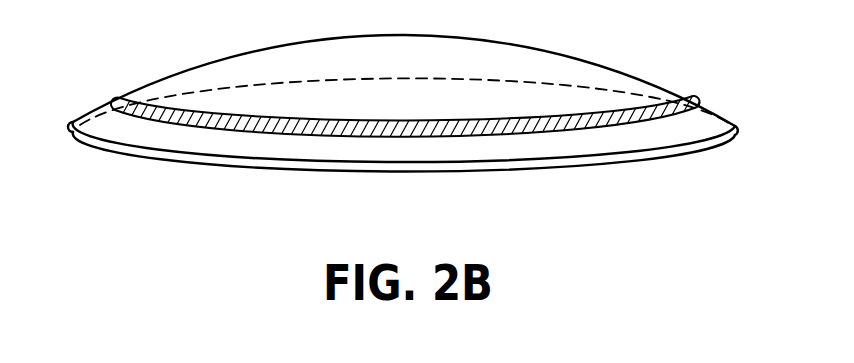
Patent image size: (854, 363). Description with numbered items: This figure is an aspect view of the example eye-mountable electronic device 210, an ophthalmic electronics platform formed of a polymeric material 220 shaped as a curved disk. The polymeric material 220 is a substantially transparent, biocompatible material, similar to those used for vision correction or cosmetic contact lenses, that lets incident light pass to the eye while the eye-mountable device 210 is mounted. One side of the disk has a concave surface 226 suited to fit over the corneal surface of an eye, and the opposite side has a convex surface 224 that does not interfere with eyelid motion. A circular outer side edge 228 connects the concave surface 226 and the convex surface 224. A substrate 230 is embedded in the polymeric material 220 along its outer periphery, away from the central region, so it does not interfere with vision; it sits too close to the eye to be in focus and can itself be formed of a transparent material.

The eye-mountable electronic device 210 is at (167, 38).
The polymeric material 220 is at (159, 168).
The convex surface 224 is at (645, 72).
The concave surface 226 is at (662, 138).
The circular outer side edge 228 is at (553, 162).
The substrate 230 is at (128, 104).